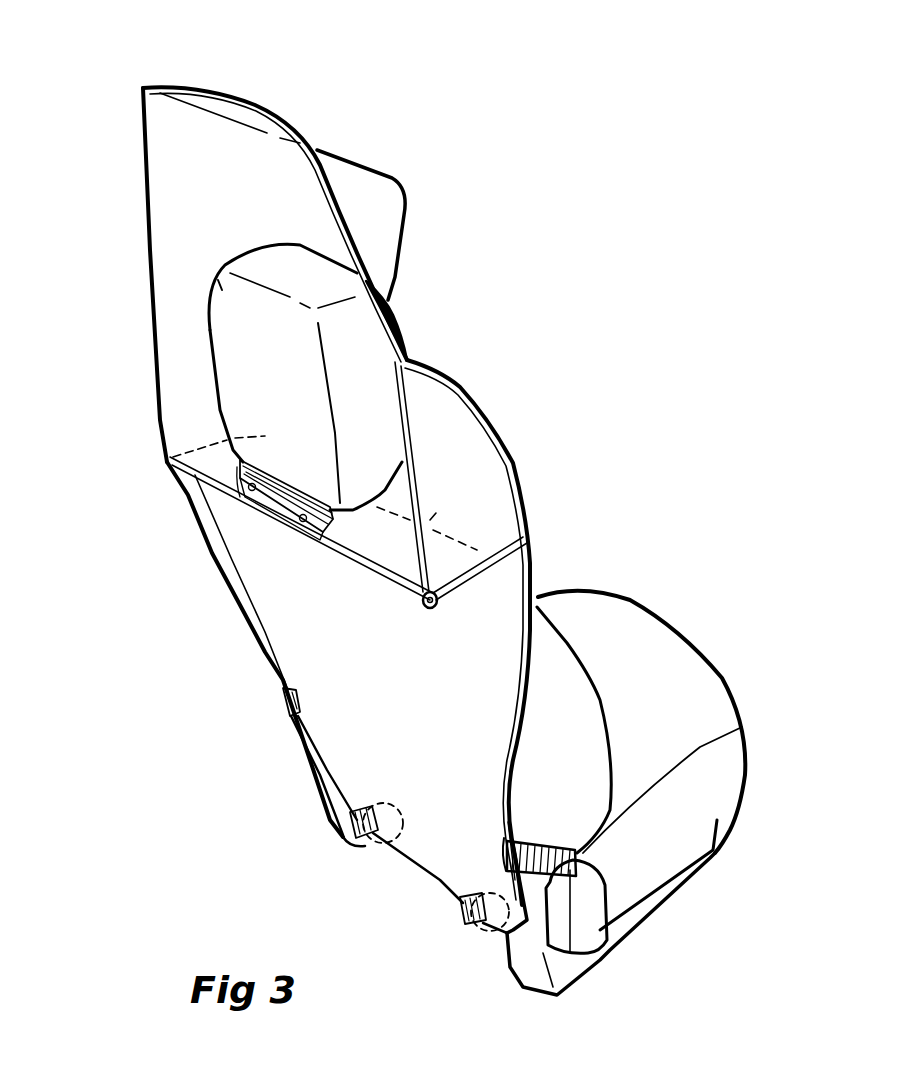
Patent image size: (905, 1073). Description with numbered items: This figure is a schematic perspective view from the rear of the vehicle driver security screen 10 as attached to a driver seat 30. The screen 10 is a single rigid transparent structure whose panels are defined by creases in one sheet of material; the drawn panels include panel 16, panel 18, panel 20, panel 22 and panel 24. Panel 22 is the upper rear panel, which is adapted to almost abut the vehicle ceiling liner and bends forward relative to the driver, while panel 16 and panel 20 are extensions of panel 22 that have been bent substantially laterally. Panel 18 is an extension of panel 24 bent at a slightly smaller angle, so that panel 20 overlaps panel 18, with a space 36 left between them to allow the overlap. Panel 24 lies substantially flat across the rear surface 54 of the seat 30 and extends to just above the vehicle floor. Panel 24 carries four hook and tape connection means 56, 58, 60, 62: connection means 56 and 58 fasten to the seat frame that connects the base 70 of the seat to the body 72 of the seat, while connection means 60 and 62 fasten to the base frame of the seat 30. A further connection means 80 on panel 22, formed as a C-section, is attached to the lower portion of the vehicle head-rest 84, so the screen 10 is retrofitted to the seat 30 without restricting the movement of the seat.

The vehicle driver security screen 10 is at (106, 79).
The panel 16 is at (388, 198).
The panel 18 is at (503, 603).
The panel 20 is at (487, 473).
The panel 22 is at (166, 222).
The panel 24 is at (190, 490).
The vehicle seat 30 is at (758, 778).
The space 36 is at (427, 610).
The rear surface 54 is at (290, 630).
The connection means 56 is at (283, 698).
The connection means 58 is at (510, 843).
The connection means 60 is at (357, 840).
The connection means 62 is at (463, 920).
The base 70 is at (693, 710).
The body 72 is at (560, 683).
The connection means 80 is at (290, 510).
The vehicle head-rest 84 is at (230, 370).